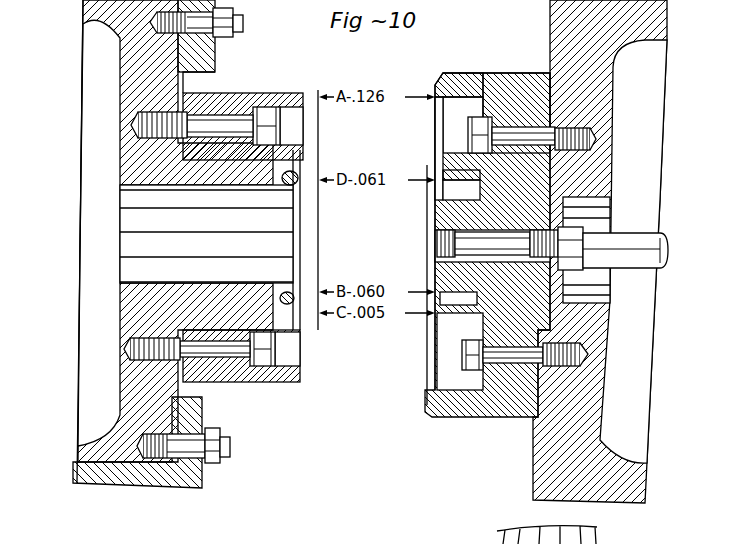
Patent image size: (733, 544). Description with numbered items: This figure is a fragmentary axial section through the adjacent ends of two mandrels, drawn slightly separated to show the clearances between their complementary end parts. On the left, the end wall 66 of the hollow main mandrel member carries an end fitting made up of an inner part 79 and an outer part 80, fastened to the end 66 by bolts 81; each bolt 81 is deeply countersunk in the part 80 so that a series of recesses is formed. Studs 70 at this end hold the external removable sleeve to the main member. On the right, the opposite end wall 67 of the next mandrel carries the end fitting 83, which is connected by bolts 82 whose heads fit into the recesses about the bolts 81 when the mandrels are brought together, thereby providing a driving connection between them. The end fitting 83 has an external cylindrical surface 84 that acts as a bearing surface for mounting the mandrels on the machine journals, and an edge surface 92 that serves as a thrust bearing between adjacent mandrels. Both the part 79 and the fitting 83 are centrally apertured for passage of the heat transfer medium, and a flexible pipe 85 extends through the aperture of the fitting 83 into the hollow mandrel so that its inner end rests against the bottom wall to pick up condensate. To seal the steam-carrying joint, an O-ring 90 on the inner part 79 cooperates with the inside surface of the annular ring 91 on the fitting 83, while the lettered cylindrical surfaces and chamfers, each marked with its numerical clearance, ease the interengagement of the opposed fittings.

The end portion 66 is at (117, 400).
The end portion 67 is at (597, 441).
The studs 70 is at (205, 473).
The end fitting part 79 is at (215, 172).
The end fitting part 80 is at (232, 93).
The bolts 81 is at (233, 380).
The bolts 82 is at (480, 120).
The end fitting 83 is at (500, 407).
The external cylindrical surface 84 is at (545, 77).
The pipe 85 is at (660, 233).
The O-ring 90 is at (288, 187).
The annular ring 91 is at (458, 175).
The edge surface 92 is at (436, 83).